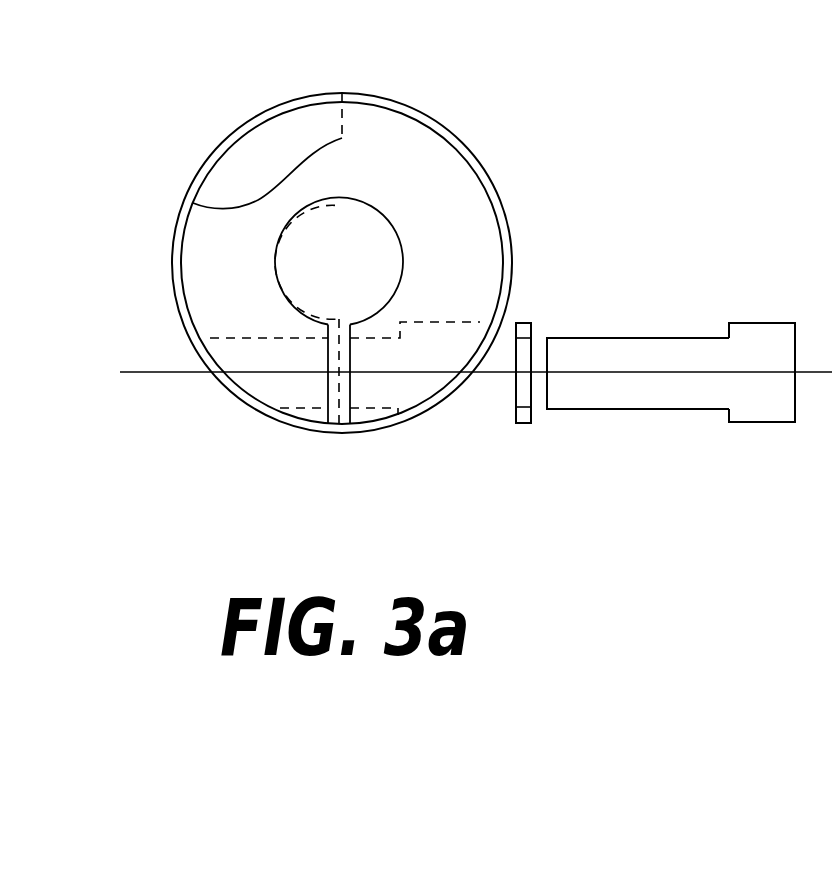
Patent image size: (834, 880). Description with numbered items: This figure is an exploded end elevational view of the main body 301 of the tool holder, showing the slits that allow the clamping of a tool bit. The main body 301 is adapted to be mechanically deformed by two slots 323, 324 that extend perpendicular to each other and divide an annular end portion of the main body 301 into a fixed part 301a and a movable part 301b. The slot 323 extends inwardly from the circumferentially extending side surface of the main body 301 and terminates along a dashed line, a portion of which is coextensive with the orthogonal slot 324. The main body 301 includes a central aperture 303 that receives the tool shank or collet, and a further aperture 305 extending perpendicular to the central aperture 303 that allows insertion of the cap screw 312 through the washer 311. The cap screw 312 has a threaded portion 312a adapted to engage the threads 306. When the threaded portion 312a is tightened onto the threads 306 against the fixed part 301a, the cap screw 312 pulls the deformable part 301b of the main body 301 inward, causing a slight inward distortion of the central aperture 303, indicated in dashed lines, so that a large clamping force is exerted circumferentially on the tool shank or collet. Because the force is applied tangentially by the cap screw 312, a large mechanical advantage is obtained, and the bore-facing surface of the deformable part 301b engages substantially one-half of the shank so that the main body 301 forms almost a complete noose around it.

The main body 301 is at (300, 95).
The fixed part 301a is at (441, 121).
The movable part 301b is at (268, 416).
The central aperture 303 is at (394, 221).
The further aperture 305 is at (453, 308).
The threads 306 is at (228, 340).
The washer 311 is at (521, 322).
The cap screw 312 is at (765, 425).
The threaded portion 312a is at (667, 338).
The slot 323 is at (197, 203).
The slot 324 is at (341, 442).